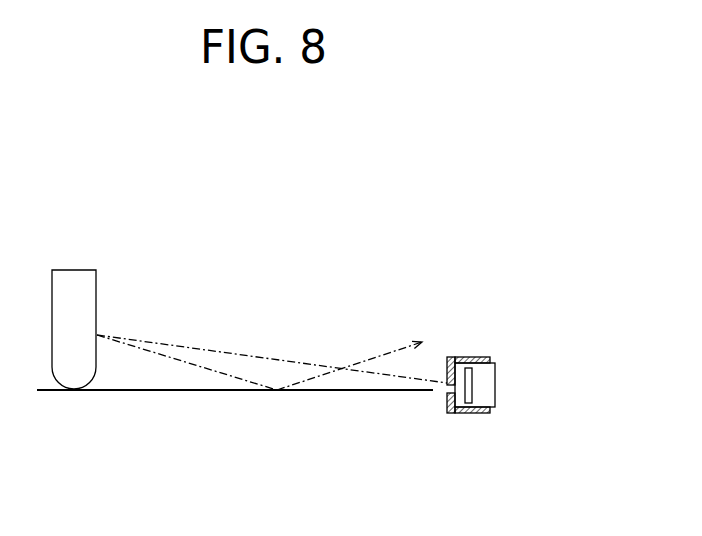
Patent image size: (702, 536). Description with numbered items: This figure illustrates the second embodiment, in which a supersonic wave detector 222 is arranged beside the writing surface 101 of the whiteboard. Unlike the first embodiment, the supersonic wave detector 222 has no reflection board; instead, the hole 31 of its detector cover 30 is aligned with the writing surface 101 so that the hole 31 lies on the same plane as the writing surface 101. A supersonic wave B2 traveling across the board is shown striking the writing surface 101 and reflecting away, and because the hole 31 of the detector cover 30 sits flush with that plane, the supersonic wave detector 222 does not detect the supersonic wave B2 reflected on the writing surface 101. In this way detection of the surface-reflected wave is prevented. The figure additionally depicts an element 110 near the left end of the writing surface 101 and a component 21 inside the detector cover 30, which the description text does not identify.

The pen-shaped pointing device 110 is at (97, 305).
The writing surface 101 is at (120, 392).
The supersonic wave B2 is at (323, 375).
The detector cover 30 is at (462, 357).
The hole 31 is at (447, 410).
The supersonic wave detector 222 is at (493, 363).
The light receiving element 21 is at (472, 383).